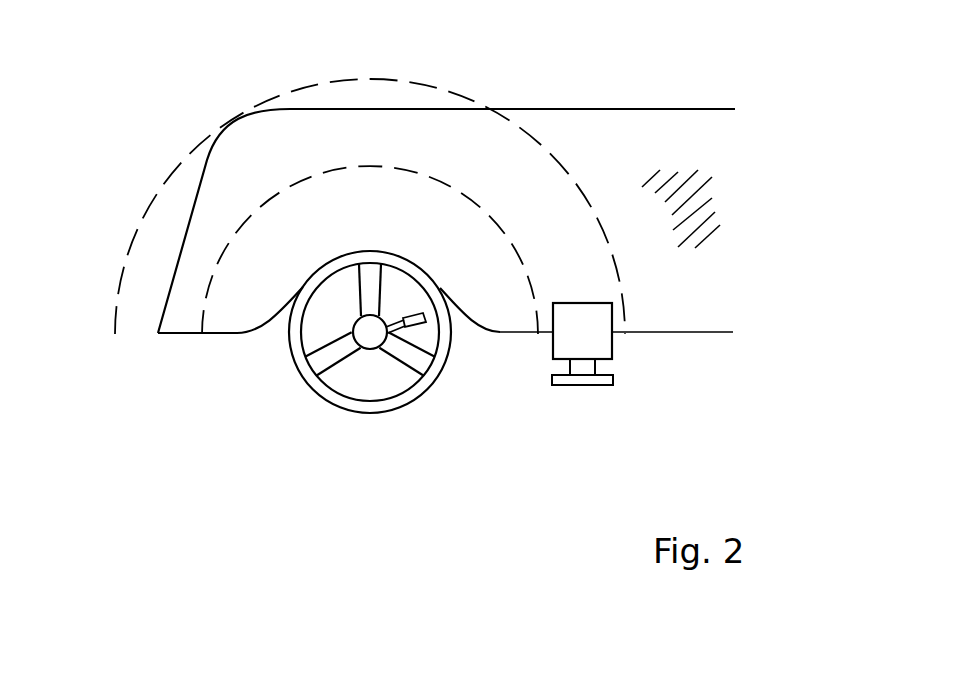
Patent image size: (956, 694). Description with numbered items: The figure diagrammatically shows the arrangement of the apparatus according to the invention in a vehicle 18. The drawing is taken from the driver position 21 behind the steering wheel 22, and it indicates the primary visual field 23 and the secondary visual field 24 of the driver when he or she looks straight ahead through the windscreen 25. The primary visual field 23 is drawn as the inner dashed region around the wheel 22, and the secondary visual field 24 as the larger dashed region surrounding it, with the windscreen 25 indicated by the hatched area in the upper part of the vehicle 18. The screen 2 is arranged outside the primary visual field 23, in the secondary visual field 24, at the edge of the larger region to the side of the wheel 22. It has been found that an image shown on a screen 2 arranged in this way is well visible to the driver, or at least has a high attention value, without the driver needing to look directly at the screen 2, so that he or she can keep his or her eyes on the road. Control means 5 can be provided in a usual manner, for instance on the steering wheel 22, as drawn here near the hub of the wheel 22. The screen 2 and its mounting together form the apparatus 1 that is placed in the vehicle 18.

The vehicle 18 is at (748, 155).
The secondary visual field 24 is at (384, 147).
The primary visual field 23 is at (384, 228).
The windscreen 25 is at (663, 158).
The driver position 21 is at (320, 359).
The steering wheel 22 is at (303, 368).
The control means 5 is at (417, 328).
The screen 2 is at (597, 341).
The sensor device 1 is at (616, 373).